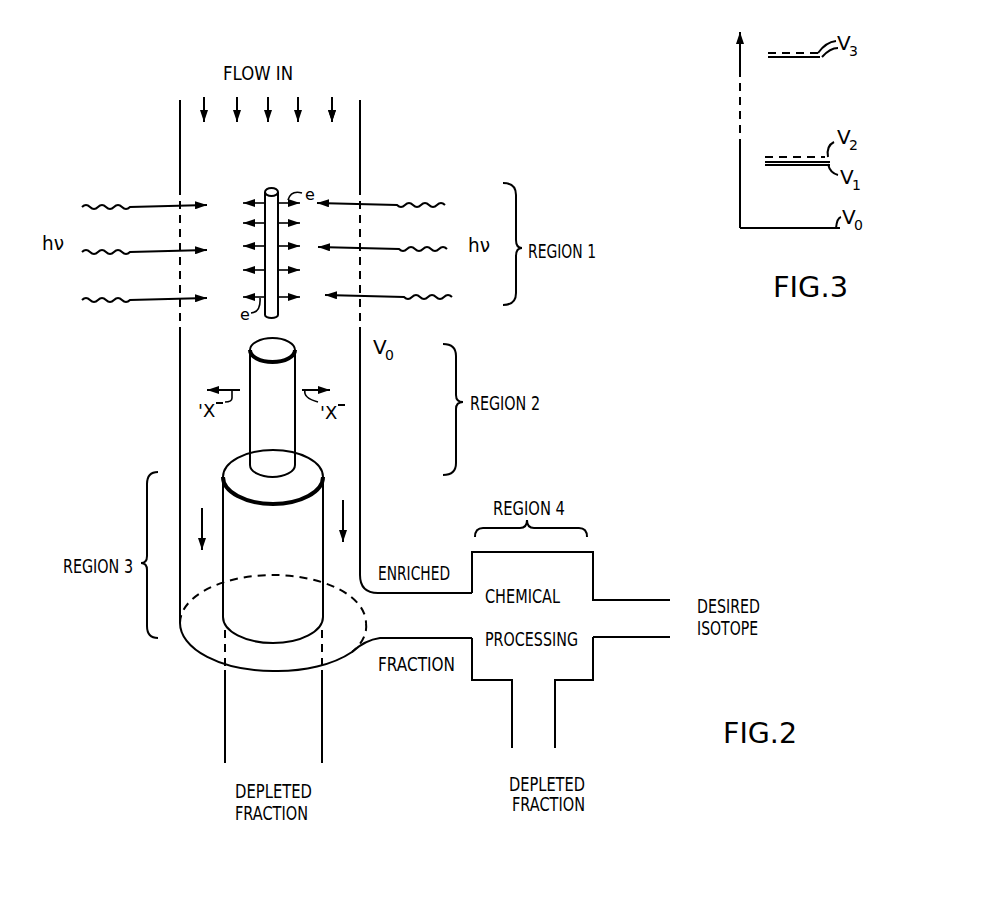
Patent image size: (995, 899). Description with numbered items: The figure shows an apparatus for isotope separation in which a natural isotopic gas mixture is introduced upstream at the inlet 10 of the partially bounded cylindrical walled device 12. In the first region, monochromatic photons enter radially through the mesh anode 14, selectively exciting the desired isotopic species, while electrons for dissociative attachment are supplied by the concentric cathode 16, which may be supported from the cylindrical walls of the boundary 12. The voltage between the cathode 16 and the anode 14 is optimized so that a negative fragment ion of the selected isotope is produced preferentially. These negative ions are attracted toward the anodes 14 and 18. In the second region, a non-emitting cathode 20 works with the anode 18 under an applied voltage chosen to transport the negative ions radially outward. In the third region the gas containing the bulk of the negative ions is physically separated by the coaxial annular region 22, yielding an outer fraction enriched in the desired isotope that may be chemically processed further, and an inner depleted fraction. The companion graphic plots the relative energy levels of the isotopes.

The inlet 10 is at (233, 164).
The partially bounded cylindrical walled device 12 is at (360, 130).
The mesh anode 14 is at (180, 222).
The concentric cathode 16 is at (278, 190).
The anode 18 is at (360, 407).
The non-emitting cathode 20 is at (296, 366).
The coaxial annular region 22 is at (350, 508).